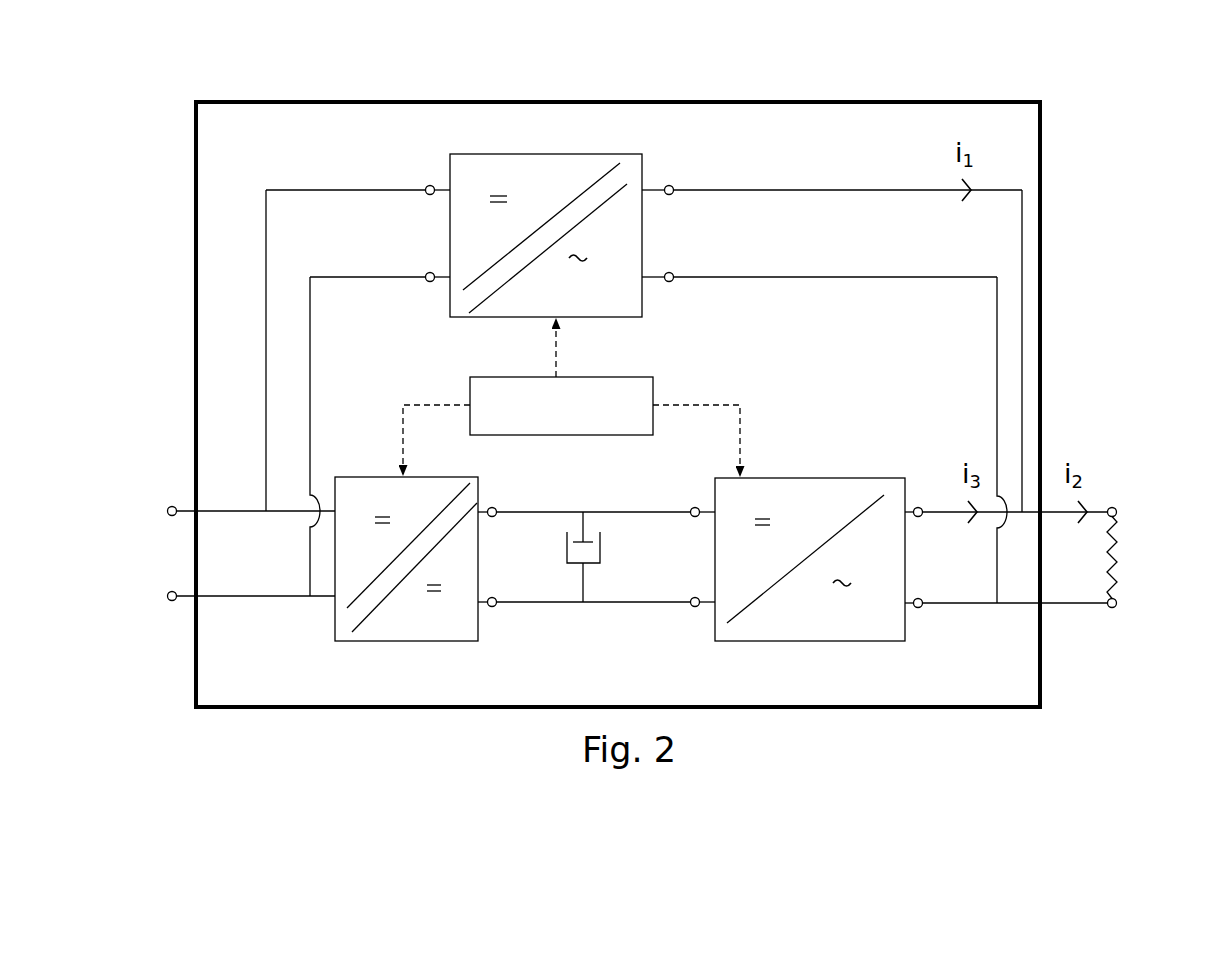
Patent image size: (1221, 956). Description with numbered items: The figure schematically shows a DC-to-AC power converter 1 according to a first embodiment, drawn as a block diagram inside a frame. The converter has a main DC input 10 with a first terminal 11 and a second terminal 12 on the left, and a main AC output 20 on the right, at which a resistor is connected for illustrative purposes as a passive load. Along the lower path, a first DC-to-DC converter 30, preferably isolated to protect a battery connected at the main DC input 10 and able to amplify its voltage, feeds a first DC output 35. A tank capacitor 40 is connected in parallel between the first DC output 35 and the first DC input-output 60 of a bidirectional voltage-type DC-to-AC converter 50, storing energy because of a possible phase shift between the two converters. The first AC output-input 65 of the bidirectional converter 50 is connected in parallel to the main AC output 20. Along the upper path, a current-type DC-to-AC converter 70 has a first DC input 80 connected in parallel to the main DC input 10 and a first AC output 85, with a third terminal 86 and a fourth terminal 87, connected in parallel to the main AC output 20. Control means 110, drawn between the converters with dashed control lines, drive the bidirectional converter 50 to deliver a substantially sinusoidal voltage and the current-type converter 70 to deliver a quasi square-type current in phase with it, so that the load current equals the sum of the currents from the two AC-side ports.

The DC-to-AC power converter 1 is at (1042, 372).
The main DC input 10 is at (221, 549).
The first terminal 11 is at (244, 486).
The second terminal 12 is at (244, 617).
The main AC output 20 is at (1121, 521).
The first DC-to-DC converter 30 is at (406, 575).
The first DC output 35 is at (497, 526).
The tank capacitor 40 is at (594, 557).
The bidirectional voltage-type DC-to-AC converter 50 is at (810, 576).
The first DC input-output 60 is at (688, 523).
The first AC output-input 65 is at (926, 522).
The current-type DC-to-AC converter 70 is at (546, 220).
The first DC input 80 is at (425, 268).
The first AC output 85 is at (832, 229).
The third terminal 86 is at (832, 170).
The fourth terminal 87 is at (819, 293).
The control means 110 is at (571, 397).